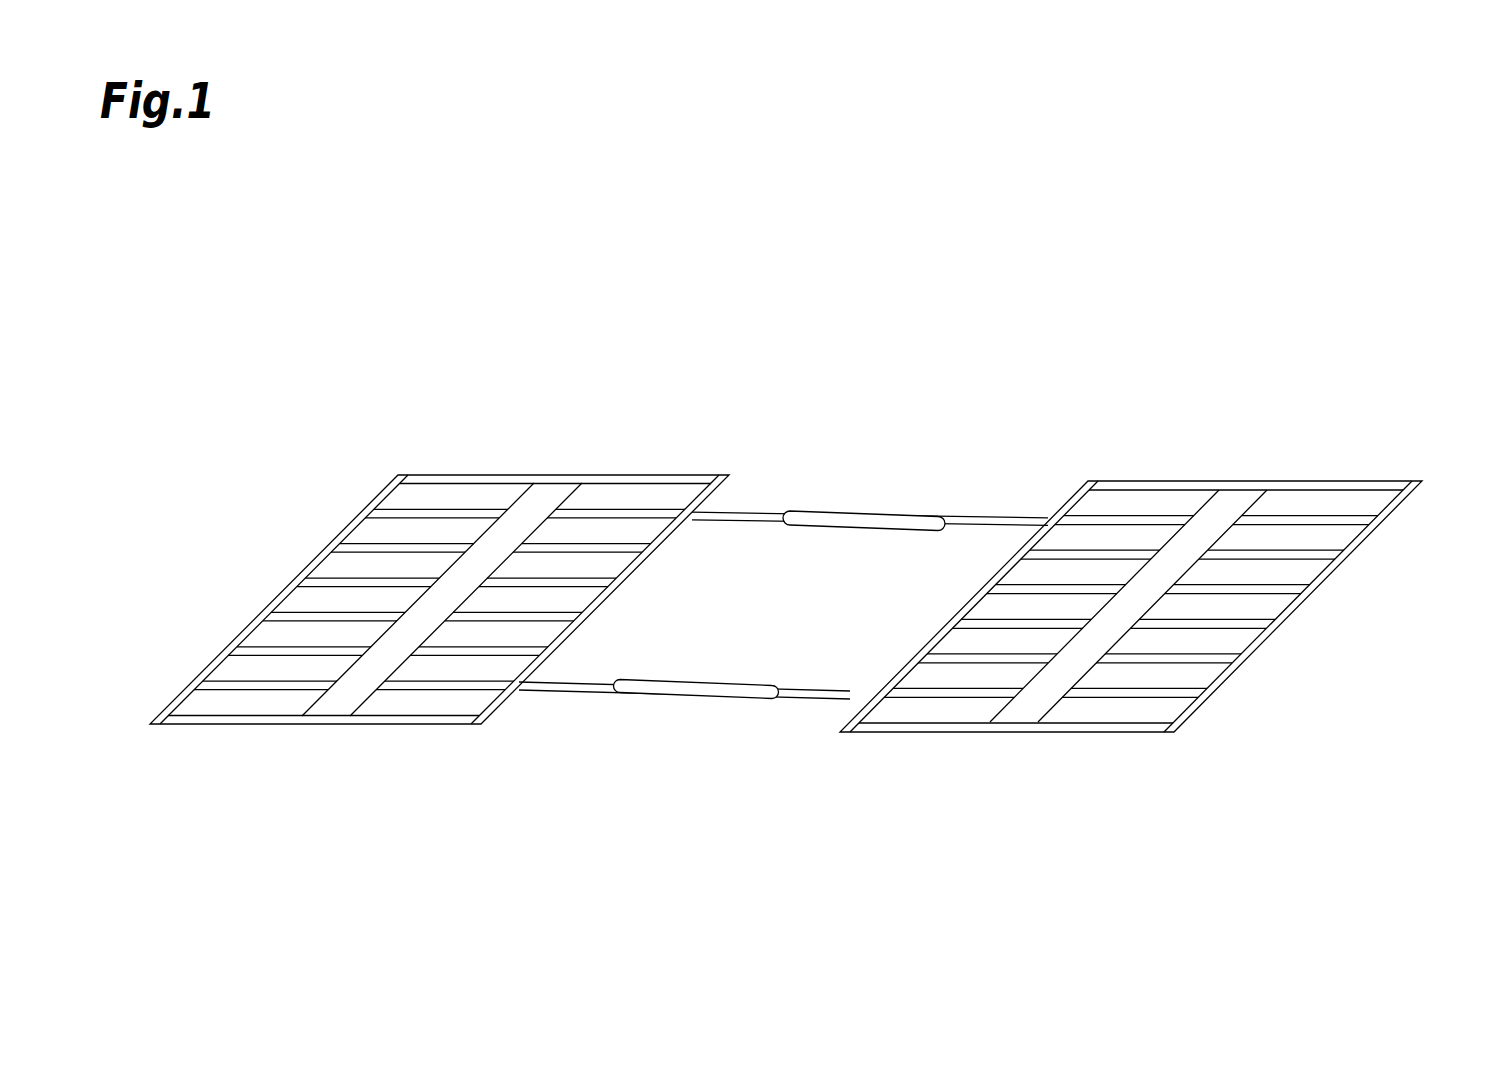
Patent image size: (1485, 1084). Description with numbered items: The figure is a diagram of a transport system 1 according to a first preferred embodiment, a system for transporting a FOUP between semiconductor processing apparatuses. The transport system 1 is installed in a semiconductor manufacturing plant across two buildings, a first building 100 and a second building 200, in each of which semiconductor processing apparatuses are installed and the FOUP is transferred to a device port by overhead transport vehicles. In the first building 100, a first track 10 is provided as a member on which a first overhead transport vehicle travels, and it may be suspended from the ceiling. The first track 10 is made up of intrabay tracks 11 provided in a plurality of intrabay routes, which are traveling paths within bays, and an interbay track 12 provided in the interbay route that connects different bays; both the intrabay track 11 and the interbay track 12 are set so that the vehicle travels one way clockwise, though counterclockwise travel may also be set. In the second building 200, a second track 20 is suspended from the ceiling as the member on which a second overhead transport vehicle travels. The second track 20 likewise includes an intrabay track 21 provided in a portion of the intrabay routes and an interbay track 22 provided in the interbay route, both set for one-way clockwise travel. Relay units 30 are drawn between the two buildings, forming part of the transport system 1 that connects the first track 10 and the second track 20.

The transport system 1 is at (1362, 345).
The first building 100 is at (343, 508).
The first track 10 is at (467, 472).
The intrabay track 11 is at (615, 507).
The interbay track 12 is at (660, 546).
The second building 200 is at (1395, 467).
The second track 20 is at (1155, 478).
The intrabay track 21 is at (1300, 515).
The interbay track 22 is at (1003, 567).
The relay unit 30 is at (847, 505).